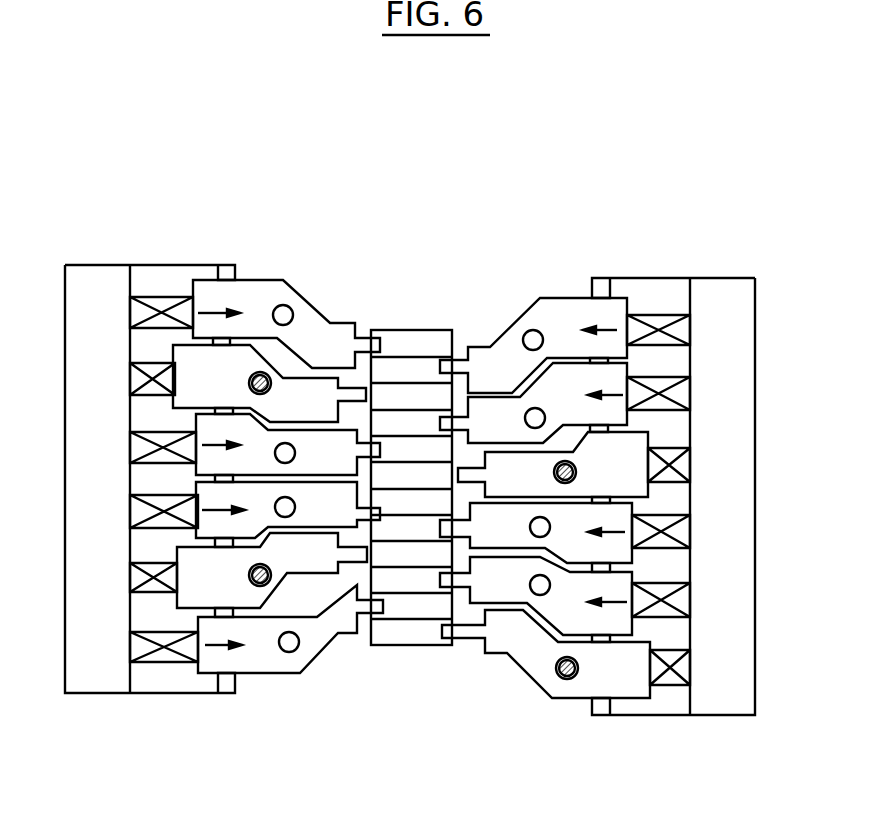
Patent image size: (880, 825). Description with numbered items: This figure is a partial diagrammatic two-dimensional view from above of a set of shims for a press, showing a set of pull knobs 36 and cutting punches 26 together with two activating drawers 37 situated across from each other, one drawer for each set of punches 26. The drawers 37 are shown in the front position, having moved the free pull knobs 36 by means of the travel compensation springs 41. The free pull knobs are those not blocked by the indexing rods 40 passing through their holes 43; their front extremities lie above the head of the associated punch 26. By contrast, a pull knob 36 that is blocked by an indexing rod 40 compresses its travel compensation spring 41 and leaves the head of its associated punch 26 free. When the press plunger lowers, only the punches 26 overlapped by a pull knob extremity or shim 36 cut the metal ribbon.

The cutting punch 26 is at (432, 340).
The pull knob 36 is at (546, 682).
The activating drawer 37 is at (95, 278).
The indexing rod 40 is at (566, 680).
The travel compensation spring 41 is at (658, 377).
The hole 43 is at (292, 652).